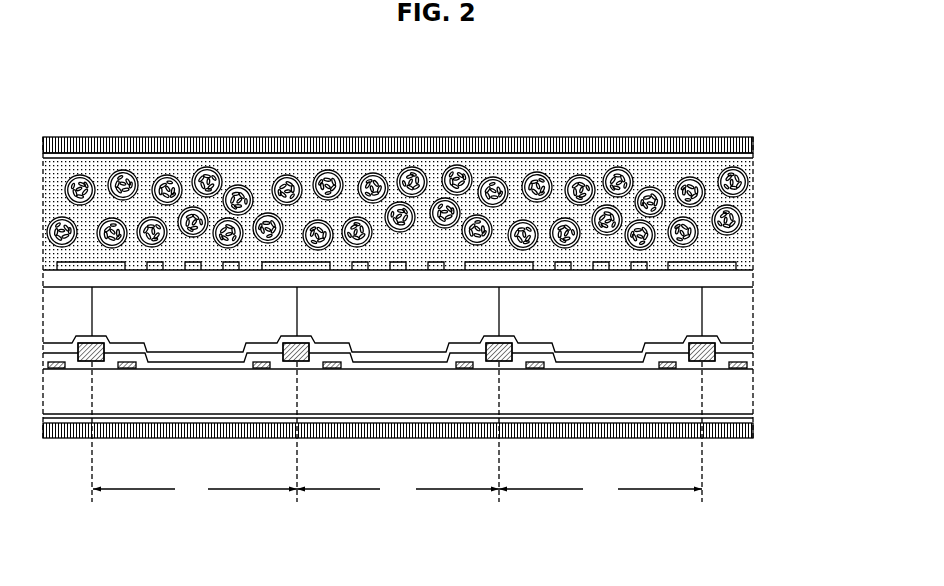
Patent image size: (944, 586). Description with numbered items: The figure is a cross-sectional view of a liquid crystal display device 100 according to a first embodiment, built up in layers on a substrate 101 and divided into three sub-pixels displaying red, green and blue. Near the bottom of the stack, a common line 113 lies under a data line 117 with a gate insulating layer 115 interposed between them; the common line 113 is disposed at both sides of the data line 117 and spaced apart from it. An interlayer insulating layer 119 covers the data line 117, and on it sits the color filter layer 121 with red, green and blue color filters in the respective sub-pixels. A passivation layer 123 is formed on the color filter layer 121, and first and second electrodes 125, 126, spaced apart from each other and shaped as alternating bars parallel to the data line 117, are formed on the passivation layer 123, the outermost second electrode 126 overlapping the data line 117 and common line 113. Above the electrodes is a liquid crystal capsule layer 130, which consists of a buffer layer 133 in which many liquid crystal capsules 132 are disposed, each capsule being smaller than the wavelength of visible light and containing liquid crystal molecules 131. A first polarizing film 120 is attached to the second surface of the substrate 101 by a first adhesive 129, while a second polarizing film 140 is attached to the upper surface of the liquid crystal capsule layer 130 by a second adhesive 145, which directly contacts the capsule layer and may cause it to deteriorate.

The liquid crystal display device 100 is at (733, 117).
The substrate 101 is at (747, 397).
The common line 113 is at (260, 370).
The gate insulating layer 115 is at (398, 369).
The data line 117 is at (492, 355).
The interlayer insulating layer 119 is at (592, 362).
The first polarizing film 120 is at (753, 434).
The color filter layer 121 is at (747, 317).
The passivation layer 123 is at (747, 281).
The first electrode 125 is at (358, 262).
The second electrode 126 is at (295, 262).
The first adhesive 129 is at (753, 416).
The liquid crystal capsule layer 130 is at (442, 214).
The liquid crystal molecules 131 is at (747, 176).
The liquid crystal capsule 132 is at (751, 192).
The buffer layer 133 is at (748, 212).
The second polarizing film 140 is at (755, 143).
The second adhesive 145 is at (753, 157).